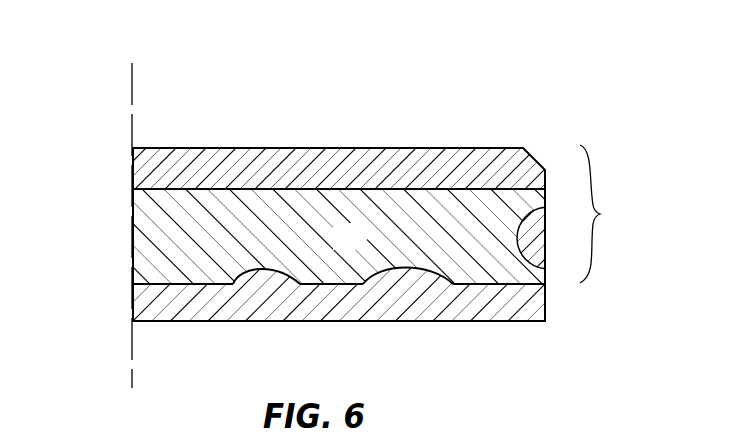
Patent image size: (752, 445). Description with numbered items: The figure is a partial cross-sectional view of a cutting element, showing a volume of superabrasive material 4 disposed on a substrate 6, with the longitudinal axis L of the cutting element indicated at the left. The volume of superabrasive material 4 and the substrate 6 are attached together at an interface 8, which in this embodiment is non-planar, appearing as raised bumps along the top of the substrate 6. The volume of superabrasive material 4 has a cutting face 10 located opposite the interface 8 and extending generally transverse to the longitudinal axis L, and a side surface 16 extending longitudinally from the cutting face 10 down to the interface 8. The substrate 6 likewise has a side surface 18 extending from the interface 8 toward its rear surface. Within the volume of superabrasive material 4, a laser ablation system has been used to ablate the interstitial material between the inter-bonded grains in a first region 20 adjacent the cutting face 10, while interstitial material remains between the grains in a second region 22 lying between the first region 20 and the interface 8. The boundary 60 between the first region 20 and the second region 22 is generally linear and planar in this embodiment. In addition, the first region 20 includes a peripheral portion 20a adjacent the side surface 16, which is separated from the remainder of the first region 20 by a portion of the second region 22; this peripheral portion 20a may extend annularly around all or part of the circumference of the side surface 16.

The longitudinal axis L is at (131, 98).
The volume of superabrasive material 4 is at (600, 214).
The substrate 6 is at (338, 307).
The interface 8 is at (252, 268).
The cutting face 10 is at (280, 148).
The side surface 16 is at (547, 240).
The side surface 18 is at (545, 303).
The first region 20 is at (387, 158).
The peripheral portion 20a is at (535, 225).
The second region 22 is at (363, 247).
The boundary 60 is at (173, 187).